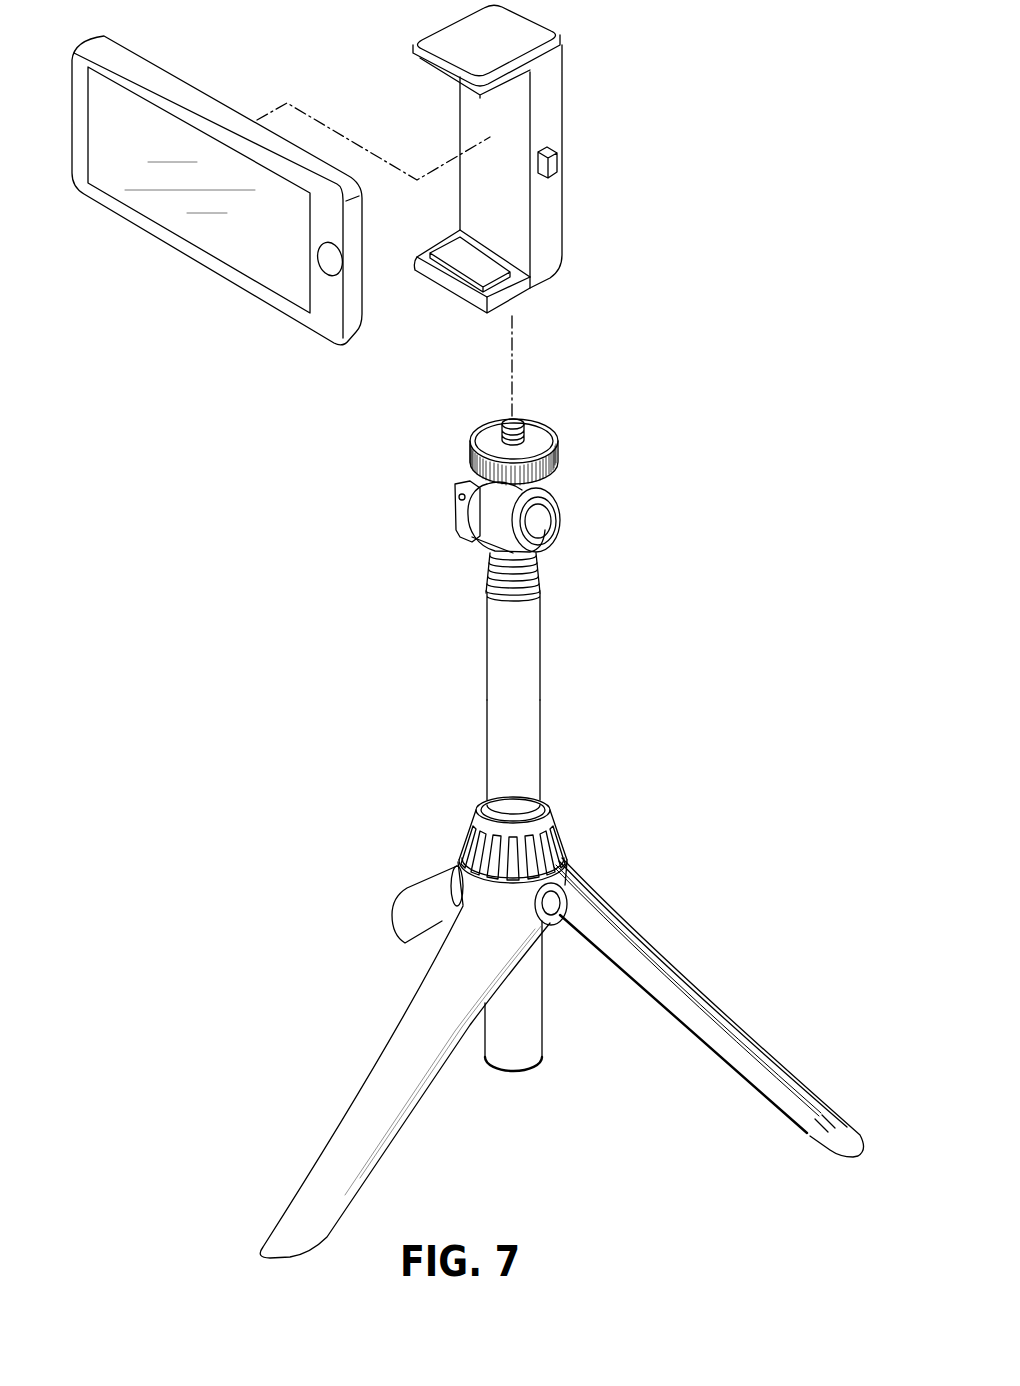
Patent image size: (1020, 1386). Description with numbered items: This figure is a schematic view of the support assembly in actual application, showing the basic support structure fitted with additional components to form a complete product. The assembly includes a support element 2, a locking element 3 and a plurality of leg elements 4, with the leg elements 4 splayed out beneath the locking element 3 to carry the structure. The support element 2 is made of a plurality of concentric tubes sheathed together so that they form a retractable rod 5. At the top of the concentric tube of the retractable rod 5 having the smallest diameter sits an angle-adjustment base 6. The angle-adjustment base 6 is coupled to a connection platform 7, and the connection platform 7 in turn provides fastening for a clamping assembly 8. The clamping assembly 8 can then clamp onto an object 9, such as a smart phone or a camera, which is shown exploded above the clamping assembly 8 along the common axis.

The support element 2 is at (513, 755).
The locking element 3 is at (543, 850).
The leg elements 4 is at (420, 902).
The retractable rod 5 is at (578, 638).
The angle-adjustment base 6 is at (583, 528).
The connection platform 7 is at (535, 437).
The clamping assembly 8 is at (543, 100).
The object 9 is at (197, 97).